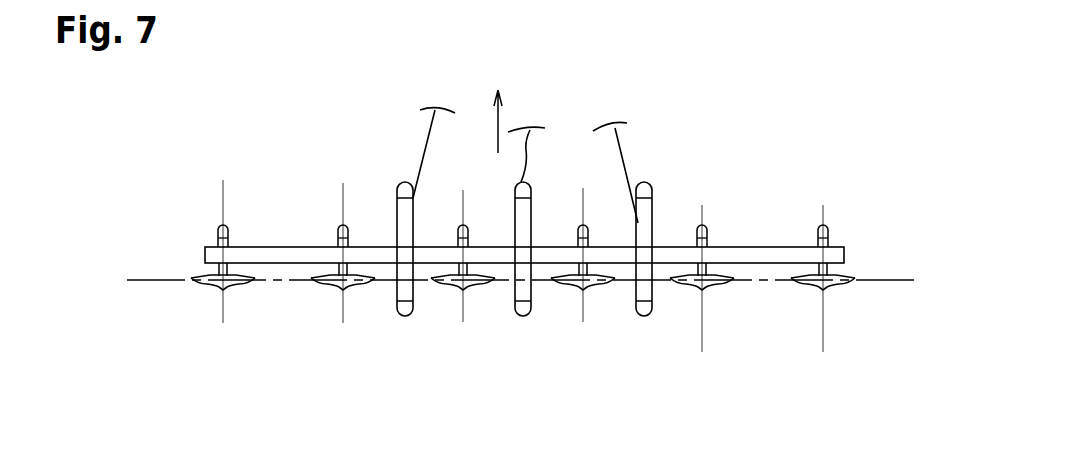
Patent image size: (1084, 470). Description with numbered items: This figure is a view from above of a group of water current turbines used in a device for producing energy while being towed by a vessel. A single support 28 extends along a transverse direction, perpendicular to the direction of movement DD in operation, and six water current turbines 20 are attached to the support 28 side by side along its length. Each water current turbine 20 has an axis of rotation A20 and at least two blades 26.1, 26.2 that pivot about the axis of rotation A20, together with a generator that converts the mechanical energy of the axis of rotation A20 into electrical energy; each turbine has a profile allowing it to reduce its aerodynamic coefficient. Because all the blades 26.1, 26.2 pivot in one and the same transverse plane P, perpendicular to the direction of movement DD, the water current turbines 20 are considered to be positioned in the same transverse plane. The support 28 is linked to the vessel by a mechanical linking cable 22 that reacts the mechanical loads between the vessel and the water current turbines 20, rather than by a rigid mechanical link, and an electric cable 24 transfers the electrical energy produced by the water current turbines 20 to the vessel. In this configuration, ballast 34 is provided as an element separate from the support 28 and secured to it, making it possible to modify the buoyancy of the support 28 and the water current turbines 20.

The water current turbine 20 is at (221, 221).
The mechanical linking cable 22 is at (421, 161).
The electric cable 24 is at (526, 168).
The first blade 26.1 is at (198, 285).
The second blade 26.2 is at (247, 287).
The support 28 is at (265, 246).
The ballast 34 is at (396, 202).
The axis of rotation A20 is at (223, 293).
The transverse plane P is at (157, 277).
The direction of movement DD is at (495, 122).